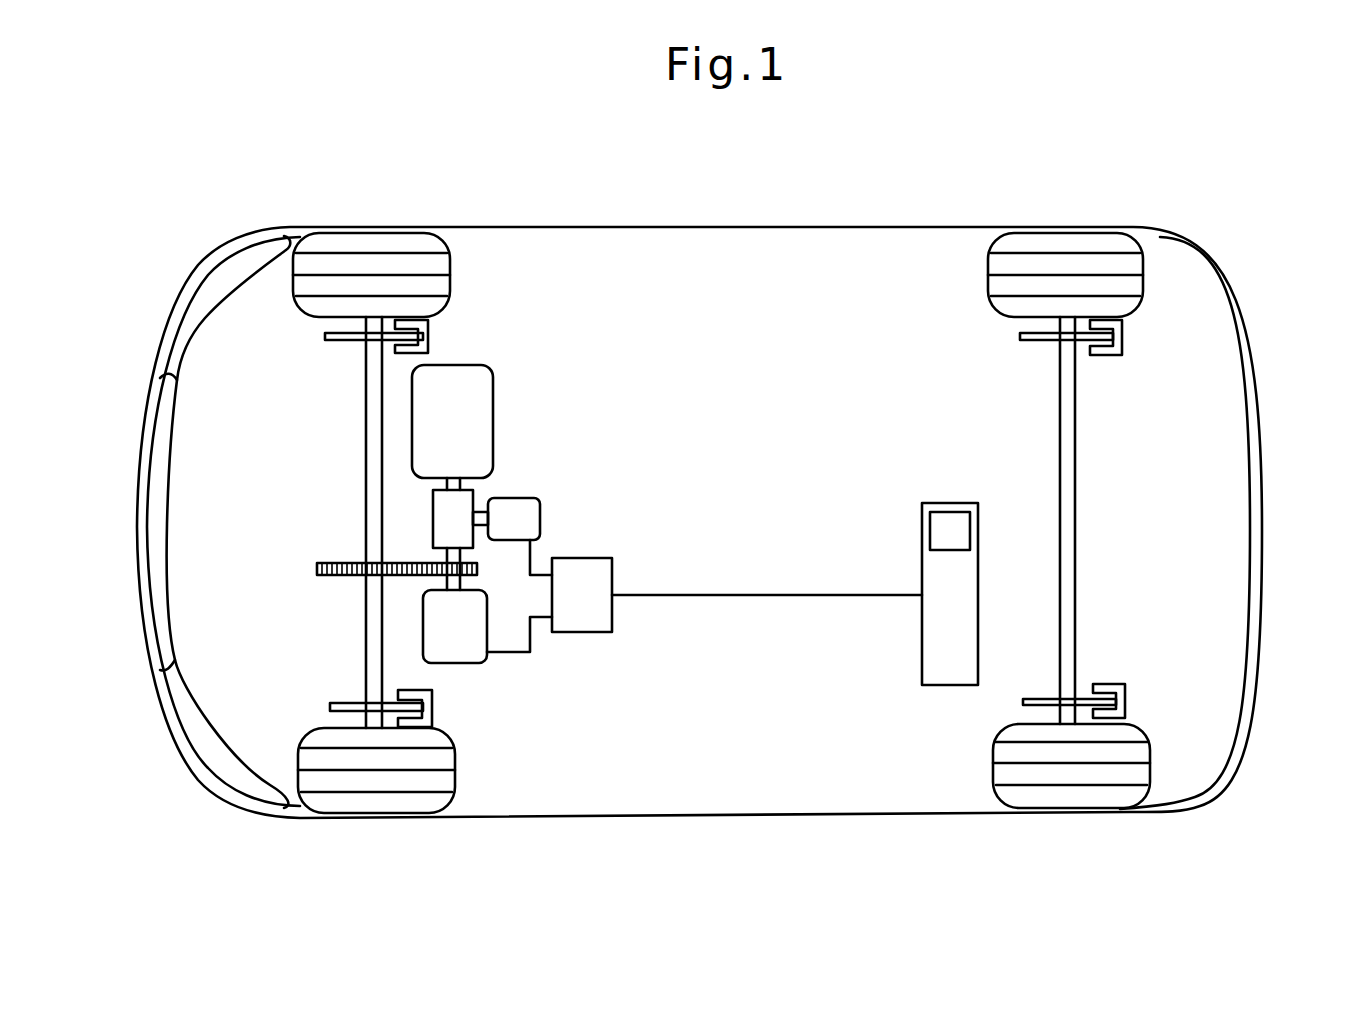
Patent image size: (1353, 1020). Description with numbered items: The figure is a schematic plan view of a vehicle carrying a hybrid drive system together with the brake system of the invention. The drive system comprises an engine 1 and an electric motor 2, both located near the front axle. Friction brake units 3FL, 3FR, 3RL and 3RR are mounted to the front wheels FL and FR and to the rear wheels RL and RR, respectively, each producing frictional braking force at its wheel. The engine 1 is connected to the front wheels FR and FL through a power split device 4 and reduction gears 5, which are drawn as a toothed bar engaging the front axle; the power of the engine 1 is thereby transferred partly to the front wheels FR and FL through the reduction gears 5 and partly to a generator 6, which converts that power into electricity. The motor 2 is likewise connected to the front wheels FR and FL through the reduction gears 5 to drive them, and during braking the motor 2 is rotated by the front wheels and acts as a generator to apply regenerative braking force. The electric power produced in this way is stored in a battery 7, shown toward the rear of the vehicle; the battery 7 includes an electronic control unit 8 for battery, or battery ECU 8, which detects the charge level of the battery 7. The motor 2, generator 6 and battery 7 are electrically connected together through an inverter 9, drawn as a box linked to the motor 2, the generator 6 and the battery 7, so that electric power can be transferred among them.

The engine 1 is at (490, 430).
The electric motor 2 is at (447, 655).
The power split device 4 is at (465, 503).
The reduction gears 5 is at (438, 563).
The generator 6 is at (527, 520).
The battery 7 is at (935, 645).
The electronic control unit for battery 8 is at (948, 522).
The inverter 9 is at (582, 624).
The friction brake unit 3FR is at (423, 335).
The friction brake unit 3FL is at (430, 716).
The friction brake unit 3RR is at (1105, 353).
The friction brake unit 3RL is at (1108, 688).
The front right wheel FR is at (370, 245).
The front left wheel FL is at (375, 800).
The rear right wheel RR is at (1060, 245).
The rear left wheel RL is at (1068, 795).